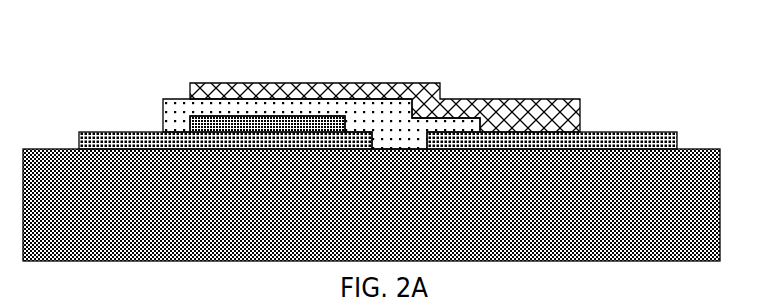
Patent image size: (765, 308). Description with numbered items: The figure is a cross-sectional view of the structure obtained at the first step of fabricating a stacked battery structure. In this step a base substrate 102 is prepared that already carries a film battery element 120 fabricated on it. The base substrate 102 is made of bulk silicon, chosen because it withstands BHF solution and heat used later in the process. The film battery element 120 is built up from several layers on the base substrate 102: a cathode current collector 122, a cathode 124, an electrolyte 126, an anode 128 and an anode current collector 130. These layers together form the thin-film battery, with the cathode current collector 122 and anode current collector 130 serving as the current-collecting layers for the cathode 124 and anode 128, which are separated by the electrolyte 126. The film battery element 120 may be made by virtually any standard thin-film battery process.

The base substrate 102 is at (397, 215).
The film battery element 120 is at (350, 83).
The cathode current collector 122 is at (79, 132).
The cathode 124 is at (180, 127).
The electrolyte 126 is at (170, 99).
The anode 128 is at (548, 100).
The anode current collector 130 is at (612, 132).